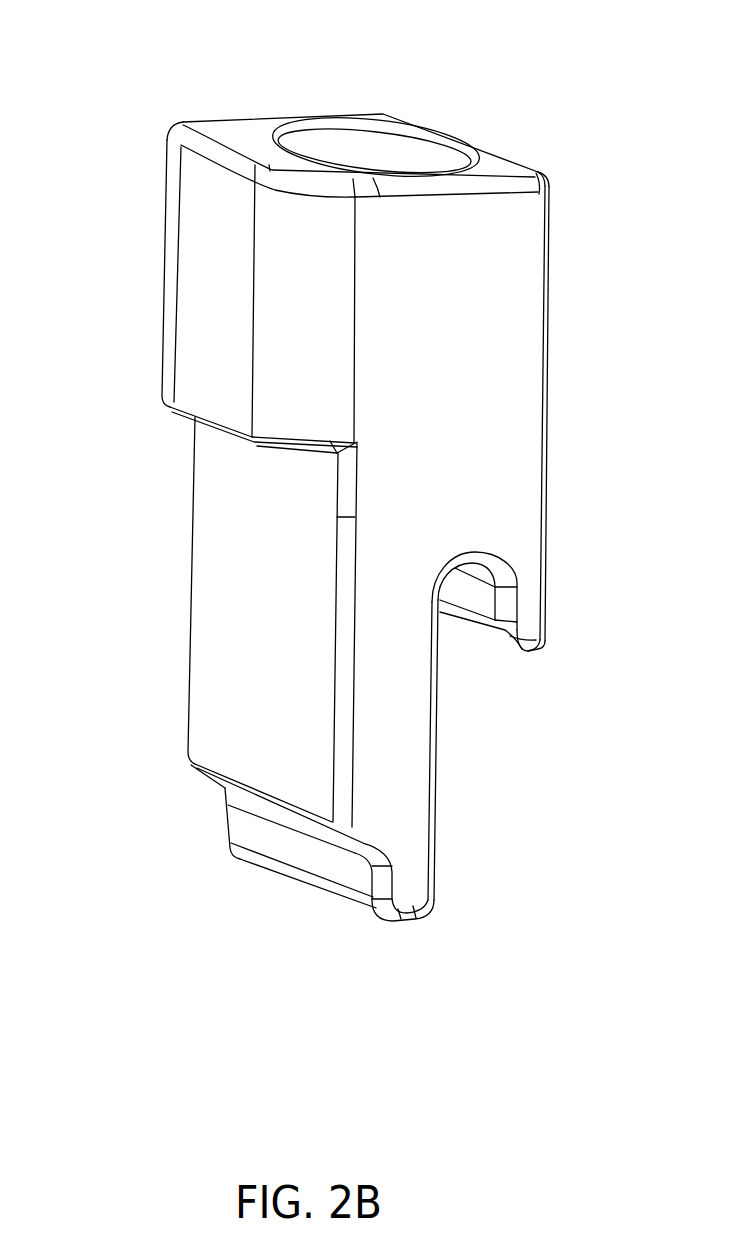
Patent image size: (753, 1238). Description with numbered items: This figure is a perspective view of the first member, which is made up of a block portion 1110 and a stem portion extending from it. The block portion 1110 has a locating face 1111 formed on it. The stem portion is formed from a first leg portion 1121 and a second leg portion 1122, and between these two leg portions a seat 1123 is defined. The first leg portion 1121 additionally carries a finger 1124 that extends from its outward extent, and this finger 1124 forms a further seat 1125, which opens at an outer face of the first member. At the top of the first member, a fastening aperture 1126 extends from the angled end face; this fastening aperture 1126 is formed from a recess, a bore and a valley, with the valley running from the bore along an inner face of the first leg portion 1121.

The block portion 1110 is at (220, 340).
The locating face 1111 is at (218, 427).
The first leg portion 1121 is at (278, 748).
The second leg portion 1122 is at (528, 607).
The seat 1123 is at (475, 550).
The finger 1124 is at (308, 858).
The seat 1125 is at (365, 832).
The fastening aperture 1126 is at (372, 152).